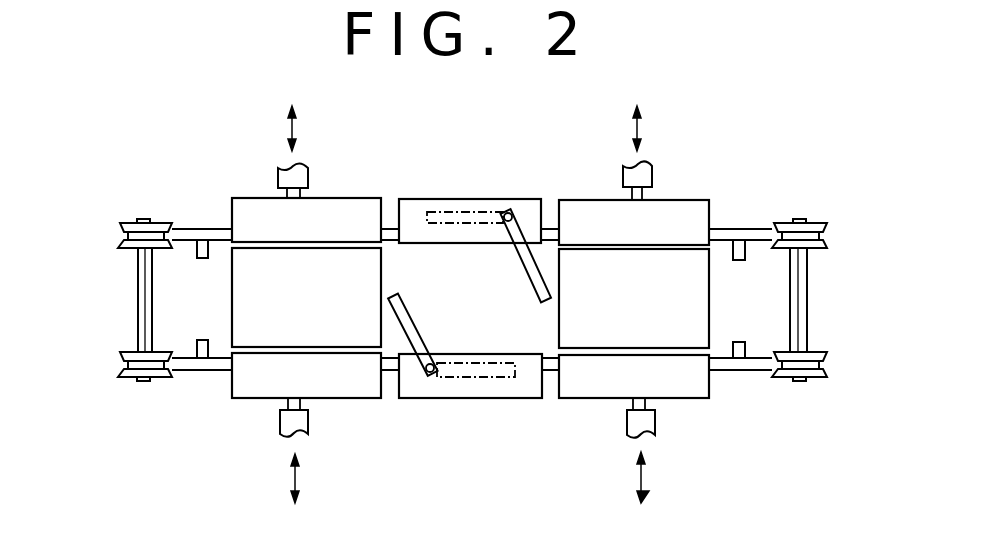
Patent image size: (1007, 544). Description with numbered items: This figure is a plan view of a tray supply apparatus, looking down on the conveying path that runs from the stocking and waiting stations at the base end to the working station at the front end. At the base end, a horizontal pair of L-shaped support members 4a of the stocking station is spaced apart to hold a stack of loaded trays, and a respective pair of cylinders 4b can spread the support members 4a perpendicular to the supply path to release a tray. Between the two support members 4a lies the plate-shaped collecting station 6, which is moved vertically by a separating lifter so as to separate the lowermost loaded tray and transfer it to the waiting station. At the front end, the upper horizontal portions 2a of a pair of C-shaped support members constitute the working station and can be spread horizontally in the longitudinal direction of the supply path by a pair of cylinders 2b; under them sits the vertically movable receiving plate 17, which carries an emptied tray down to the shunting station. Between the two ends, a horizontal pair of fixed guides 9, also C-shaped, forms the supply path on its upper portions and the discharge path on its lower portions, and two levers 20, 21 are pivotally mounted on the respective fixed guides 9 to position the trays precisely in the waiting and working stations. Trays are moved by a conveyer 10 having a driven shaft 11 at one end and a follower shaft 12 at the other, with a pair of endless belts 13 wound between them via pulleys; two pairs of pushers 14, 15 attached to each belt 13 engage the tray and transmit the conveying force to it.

The upper horizontal portions 2a is at (680, 210).
The cylinders 2b is at (645, 180).
The support members 4a is at (342, 198).
The cylinders 4b is at (300, 180).
The collecting station 6 is at (263, 323).
The fixed guides 9 is at (447, 198).
The conveyer 10 is at (134, 284).
The driven shaft 11 is at (138, 315).
The follower shaft 12 is at (805, 288).
The endless belts 13 is at (180, 230).
The pushers 14 is at (202, 230).
The pushers 15 is at (742, 244).
The receiving plate 17 is at (590, 340).
The lever 20 is at (408, 373).
The lever 21 is at (521, 198).